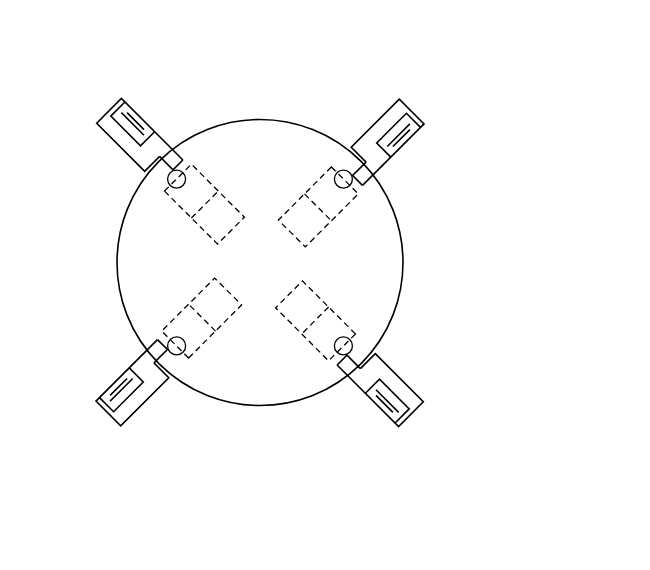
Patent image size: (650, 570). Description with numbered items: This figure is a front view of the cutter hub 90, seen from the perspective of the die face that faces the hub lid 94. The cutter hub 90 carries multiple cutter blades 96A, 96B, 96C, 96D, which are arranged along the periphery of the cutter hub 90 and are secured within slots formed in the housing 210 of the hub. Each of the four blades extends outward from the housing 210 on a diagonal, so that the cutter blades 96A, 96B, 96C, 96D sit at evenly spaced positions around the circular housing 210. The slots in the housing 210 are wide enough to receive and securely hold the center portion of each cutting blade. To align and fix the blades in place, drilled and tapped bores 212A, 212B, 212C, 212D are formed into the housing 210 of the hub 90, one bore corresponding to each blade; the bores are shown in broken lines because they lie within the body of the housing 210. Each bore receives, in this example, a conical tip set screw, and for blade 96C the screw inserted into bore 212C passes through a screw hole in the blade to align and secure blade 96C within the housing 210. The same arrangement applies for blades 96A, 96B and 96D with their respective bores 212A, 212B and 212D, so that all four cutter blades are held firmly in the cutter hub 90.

The cutter hub 90 is at (518, 128).
The hub lid 94 is at (313, 263).
The housing 210 is at (401, 216).
The cutter blade 96A is at (399, 98).
The cutter blade 96B is at (427, 406).
The cutter blade 96C is at (118, 428).
The cutter blade 96D is at (108, 112).
The drilled and tapped bore 212A is at (339, 171).
The drilled and tapped bore 212B is at (184, 172).
The drilled and tapped bore 212C is at (170, 341).
The drilled and tapped bore 212D is at (343, 356).